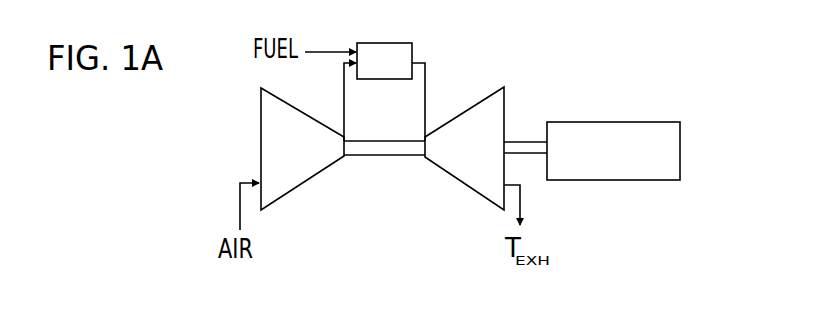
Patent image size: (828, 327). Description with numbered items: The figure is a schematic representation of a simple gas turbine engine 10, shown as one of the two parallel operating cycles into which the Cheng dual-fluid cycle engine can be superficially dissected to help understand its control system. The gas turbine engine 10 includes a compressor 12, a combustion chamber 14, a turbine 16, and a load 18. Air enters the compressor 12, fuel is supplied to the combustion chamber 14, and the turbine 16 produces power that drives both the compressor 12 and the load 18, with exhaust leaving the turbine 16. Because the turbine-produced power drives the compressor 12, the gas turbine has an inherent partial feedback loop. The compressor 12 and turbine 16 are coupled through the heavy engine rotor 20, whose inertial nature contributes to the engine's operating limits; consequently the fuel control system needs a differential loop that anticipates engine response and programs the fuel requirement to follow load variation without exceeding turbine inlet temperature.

The gas turbine engine 10 is at (136, 178).
The compressor 12 is at (259, 100).
The combustion chamber 14 is at (404, 43).
The turbine 16 is at (467, 107).
The load 18 is at (680, 158).
The engine rotor 20 is at (397, 155).